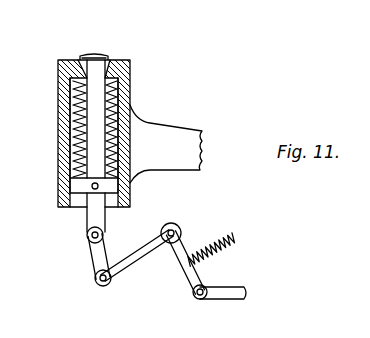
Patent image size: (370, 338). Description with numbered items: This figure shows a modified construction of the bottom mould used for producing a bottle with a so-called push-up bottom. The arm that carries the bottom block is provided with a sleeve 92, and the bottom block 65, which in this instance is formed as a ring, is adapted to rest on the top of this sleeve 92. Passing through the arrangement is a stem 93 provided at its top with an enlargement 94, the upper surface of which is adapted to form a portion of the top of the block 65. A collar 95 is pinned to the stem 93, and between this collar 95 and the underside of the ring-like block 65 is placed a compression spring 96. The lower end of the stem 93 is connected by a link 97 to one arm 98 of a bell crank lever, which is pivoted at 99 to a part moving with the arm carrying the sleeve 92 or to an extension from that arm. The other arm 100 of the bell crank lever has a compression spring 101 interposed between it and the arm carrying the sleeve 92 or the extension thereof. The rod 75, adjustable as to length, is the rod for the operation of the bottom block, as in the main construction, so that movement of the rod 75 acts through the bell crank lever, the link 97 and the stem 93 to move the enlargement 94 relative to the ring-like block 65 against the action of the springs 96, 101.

The sleeve 92 is at (130, 100).
The compression spring 96 is at (80, 83).
The stem 93 is at (80, 122).
The collar 95 is at (77, 187).
The enlargement 94 is at (103, 62).
The bottom mould or block 65 is at (120, 74).
The link 97 is at (93, 252).
The arm of bell crank lever 98 is at (148, 252).
The pivot 99 is at (171, 224).
The other arm of bell crank lever 100 is at (192, 245).
The compression spring 101 is at (236, 246).
The rod 75 is at (247, 294).